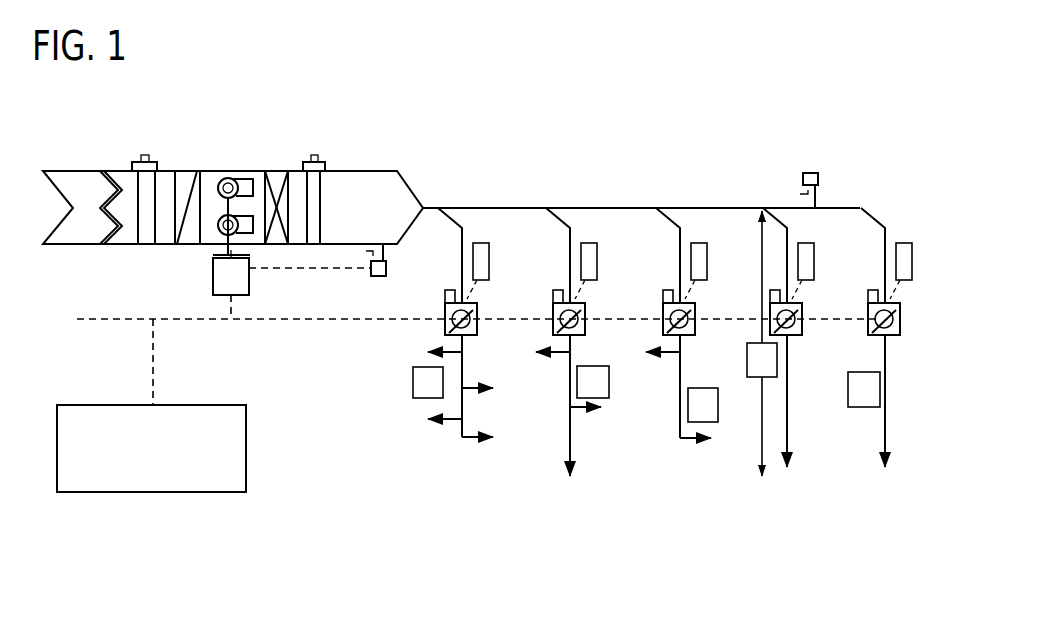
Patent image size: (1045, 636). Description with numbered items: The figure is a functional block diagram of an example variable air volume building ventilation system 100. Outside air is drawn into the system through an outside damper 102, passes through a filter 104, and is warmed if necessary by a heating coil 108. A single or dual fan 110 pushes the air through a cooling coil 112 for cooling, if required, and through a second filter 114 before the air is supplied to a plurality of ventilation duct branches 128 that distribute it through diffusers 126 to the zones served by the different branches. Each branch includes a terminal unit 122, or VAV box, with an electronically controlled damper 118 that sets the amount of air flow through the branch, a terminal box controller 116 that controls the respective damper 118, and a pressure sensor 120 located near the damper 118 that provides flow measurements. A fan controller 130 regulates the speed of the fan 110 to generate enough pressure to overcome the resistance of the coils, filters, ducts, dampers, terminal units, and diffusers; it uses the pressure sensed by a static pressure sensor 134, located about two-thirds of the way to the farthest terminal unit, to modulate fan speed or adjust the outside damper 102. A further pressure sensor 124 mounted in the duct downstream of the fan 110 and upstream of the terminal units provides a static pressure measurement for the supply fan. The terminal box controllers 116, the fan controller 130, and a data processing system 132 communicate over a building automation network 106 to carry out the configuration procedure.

The building ventilation system 100 is at (832, 66).
The outside damper 102 is at (112, 169).
The filter 104 is at (146, 154).
The building automation communication network 106 is at (298, 321).
The heating coil 108 is at (186, 188).
The fan 110 is at (244, 180).
The cooling coil 112 is at (278, 183).
The filter 114 is at (314, 155).
The terminal box controller 116 is at (481, 243).
The damper 118 is at (476, 313).
The pressure sensor 120 is at (447, 290).
The terminal unit 122 is at (477, 331).
The pressure sensor 124 is at (380, 277).
The diffuser 126 is at (436, 420).
The ventilation duct branch 128 is at (548, 533).
The fan controller 130 is at (213, 271).
The data processing system 132 is at (152, 493).
The static pressure sensor 134 is at (806, 173).